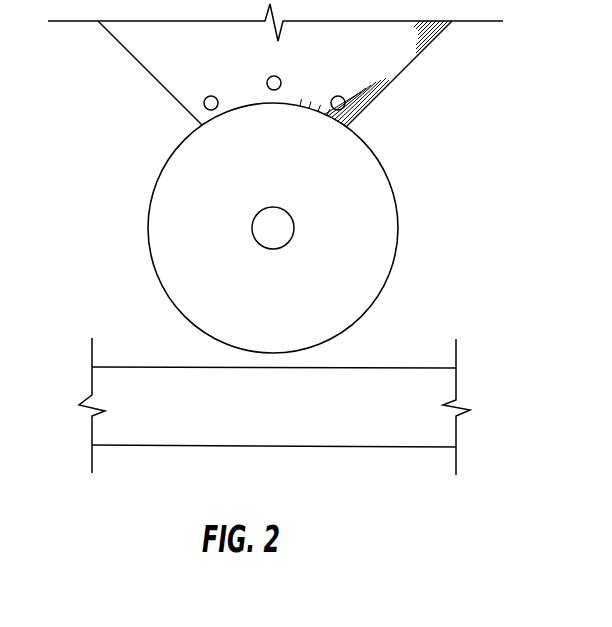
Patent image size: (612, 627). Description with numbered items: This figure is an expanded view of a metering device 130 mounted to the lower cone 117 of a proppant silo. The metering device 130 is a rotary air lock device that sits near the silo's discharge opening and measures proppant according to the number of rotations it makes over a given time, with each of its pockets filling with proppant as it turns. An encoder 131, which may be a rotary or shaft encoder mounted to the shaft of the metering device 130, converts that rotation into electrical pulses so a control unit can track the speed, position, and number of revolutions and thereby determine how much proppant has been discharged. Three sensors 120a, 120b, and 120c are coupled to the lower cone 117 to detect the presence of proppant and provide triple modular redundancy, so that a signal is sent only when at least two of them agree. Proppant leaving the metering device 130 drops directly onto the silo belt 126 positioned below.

The lower cone 117 is at (403, 55).
The sensor 120a is at (204, 104).
The sensor 120b is at (273, 76).
The sensor 120c is at (345, 108).
The silo belt 126 is at (169, 367).
The metering device 130 is at (164, 168).
The encoder 131 is at (295, 227).